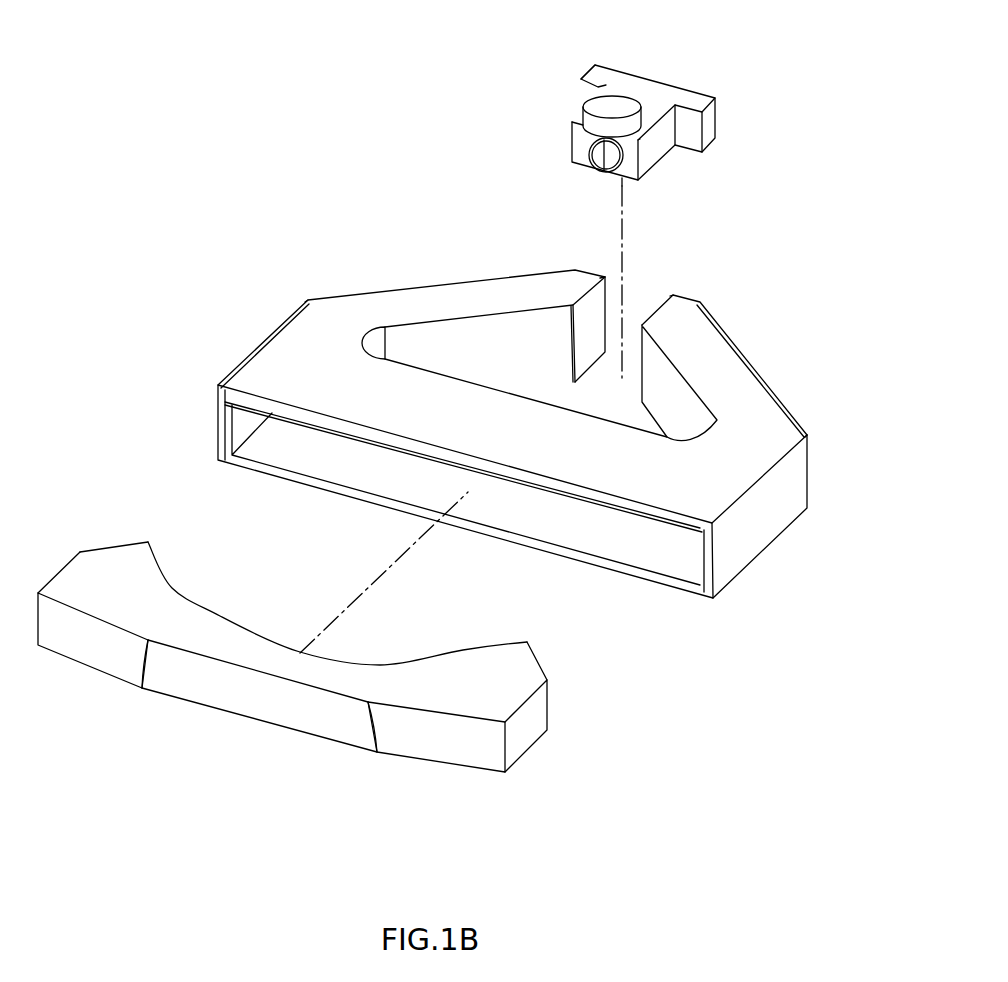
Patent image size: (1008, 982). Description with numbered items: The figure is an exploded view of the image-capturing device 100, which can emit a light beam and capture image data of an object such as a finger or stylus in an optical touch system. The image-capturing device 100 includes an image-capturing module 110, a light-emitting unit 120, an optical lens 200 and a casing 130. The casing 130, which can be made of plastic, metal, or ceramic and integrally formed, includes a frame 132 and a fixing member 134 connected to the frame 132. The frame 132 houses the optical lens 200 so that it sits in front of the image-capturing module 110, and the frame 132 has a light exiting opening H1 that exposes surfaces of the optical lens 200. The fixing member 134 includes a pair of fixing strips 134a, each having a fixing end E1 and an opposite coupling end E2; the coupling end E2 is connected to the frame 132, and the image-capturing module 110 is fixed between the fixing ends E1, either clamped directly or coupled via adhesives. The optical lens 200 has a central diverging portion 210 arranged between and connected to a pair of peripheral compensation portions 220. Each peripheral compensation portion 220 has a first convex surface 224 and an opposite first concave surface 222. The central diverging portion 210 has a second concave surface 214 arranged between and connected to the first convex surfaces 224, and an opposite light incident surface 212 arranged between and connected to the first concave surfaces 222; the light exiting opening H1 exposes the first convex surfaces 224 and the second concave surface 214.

The image-capturing device 100 is at (113, 262).
The image-capturing module 110 is at (640, 93).
The light-emitting unit 120 is at (598, 102).
The casing 130 is at (345, 242).
The frame 132 is at (272, 358).
The fixing member 134 is at (729, 315).
The fixing strips 134a is at (453, 300).
The fixing end E1 is at (578, 288).
The coupling end E2 is at (320, 333).
The light exiting opening H1 is at (314, 485).
The optical lens 200 is at (75, 523).
The central diverging portion 210 is at (221, 626).
The light incident surface 212 is at (287, 646).
The second concave surface 214 is at (266, 696).
The peripheral compensation portions 220 is at (113, 565).
The first concave surface 222 is at (175, 581).
The first convex surface 224 is at (87, 642).